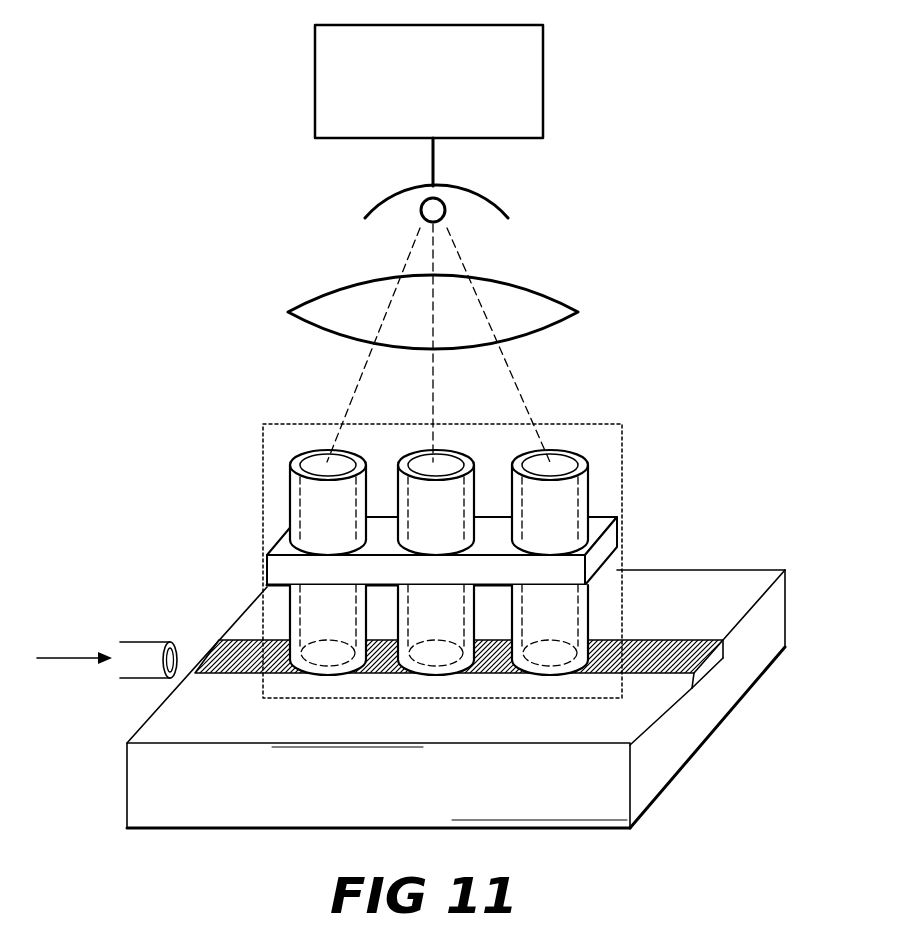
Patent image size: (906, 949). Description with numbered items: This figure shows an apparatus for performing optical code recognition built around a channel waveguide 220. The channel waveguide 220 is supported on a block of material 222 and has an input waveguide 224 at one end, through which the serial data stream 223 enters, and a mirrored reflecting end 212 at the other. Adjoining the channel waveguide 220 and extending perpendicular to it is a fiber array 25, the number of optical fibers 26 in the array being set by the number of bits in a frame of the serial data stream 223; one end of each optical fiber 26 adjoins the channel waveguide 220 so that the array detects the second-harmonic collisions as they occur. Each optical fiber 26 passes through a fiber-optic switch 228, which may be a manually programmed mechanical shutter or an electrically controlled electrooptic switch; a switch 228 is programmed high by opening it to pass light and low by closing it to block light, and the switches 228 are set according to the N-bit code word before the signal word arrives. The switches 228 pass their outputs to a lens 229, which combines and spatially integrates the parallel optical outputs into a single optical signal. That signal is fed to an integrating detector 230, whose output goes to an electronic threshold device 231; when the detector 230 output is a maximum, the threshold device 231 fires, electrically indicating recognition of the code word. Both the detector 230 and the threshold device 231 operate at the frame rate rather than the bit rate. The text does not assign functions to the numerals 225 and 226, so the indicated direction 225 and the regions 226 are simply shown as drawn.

The threshold device 231 is at (545, 116).
The detector 230 is at (498, 212).
The lens 229 is at (540, 338).
The optical fiber 26 is at (297, 462).
The fiber array 25 is at (600, 424).
The fiber-optic switch 228 is at (282, 566).
The direction of movement 225 is at (650, 506).
The container wells 226 is at (332, 660).
The channel waveguide 220 is at (648, 694).
The mirrored reflecting end 212 is at (710, 686).
The block of material 222 is at (362, 815).
The serial data stream 223 is at (90, 656).
The input waveguide 224 is at (206, 648).